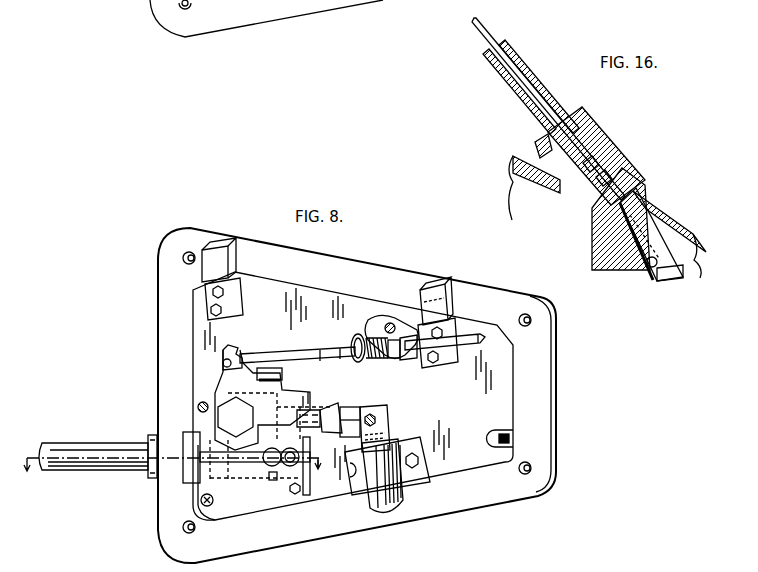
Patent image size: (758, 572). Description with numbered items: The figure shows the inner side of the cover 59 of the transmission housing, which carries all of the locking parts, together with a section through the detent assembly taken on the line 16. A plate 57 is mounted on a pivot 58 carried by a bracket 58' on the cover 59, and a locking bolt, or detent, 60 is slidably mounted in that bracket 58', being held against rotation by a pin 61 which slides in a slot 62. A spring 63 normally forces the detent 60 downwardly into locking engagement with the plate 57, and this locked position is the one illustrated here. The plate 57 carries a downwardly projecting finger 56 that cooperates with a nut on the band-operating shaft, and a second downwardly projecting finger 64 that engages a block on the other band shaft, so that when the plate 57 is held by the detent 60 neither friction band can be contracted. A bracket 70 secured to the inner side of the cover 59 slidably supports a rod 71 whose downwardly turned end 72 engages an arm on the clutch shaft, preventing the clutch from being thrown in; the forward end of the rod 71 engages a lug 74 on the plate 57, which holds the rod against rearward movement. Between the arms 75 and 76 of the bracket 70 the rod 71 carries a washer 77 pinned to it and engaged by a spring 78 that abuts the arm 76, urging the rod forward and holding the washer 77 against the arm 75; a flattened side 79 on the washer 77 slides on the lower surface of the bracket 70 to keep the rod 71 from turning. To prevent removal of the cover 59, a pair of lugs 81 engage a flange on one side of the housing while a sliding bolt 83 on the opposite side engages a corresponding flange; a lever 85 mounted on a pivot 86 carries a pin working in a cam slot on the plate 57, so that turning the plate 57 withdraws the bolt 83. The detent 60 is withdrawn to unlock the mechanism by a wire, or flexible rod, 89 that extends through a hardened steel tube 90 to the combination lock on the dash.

In FIG. 8, the cover 59 is at (393, 272).
In FIG. 16, the cover 59 is at (697, 227).
In FIG. 8, the lugs 81 is at (218, 253).
In FIG. 8, the downwardly turned end 72 is at (473, 346).
In FIG. 8, the bracket 70 is at (395, 317).
In FIG. 8, the arm 76 is at (410, 357).
In FIG. 8, the spring 78 is at (393, 356).
In FIG. 8, the arm 75 is at (361, 354).
In FIG. 8, the washer 77 is at (364, 336).
In FIG. 8, the rod 71 is at (334, 351).
In FIG. 8, the lug 74 is at (232, 351).
In FIG. 8, the flattened side 79 is at (223, 365).
In FIG. 8, the plate 57 is at (264, 400).
In FIG. 8, the pivot 58 is at (235, 417).
In FIG. 8, the downwardly projecting finger 64 is at (282, 376).
In FIG. 8, the locking bolt or detent 60 is at (289, 447).
In FIG. 16, the locking bolt or detent 60 is at (672, 278).
In FIG. 8, the hardened steel tube 90 is at (99, 470).
In FIG. 16, the hardened steel tube 90 is at (526, 60).
In FIG. 8, the section line 16 is at (175, 476).
In FIG. 8, the downwardly projecting finger 56 is at (208, 470).
In FIG. 8, the bracket 58' is at (252, 488).
In FIG. 16, the bracket 58' is at (604, 219).
In FIG. 8, the wire or flexible rod 89 is at (320, 407).
In FIG. 16, the wire or flexible rod 89 is at (490, 40).
In FIG. 8, the pivot 86 is at (347, 408).
In FIG. 8, the lever 85 is at (357, 407).
In FIG. 8, the sliding bolt 83 is at (403, 506).
In FIG. 16, the spring 63 is at (602, 172).
In FIG. 16, the pin 61 is at (652, 270).
In FIG. 16, the slot 62 is at (634, 268).